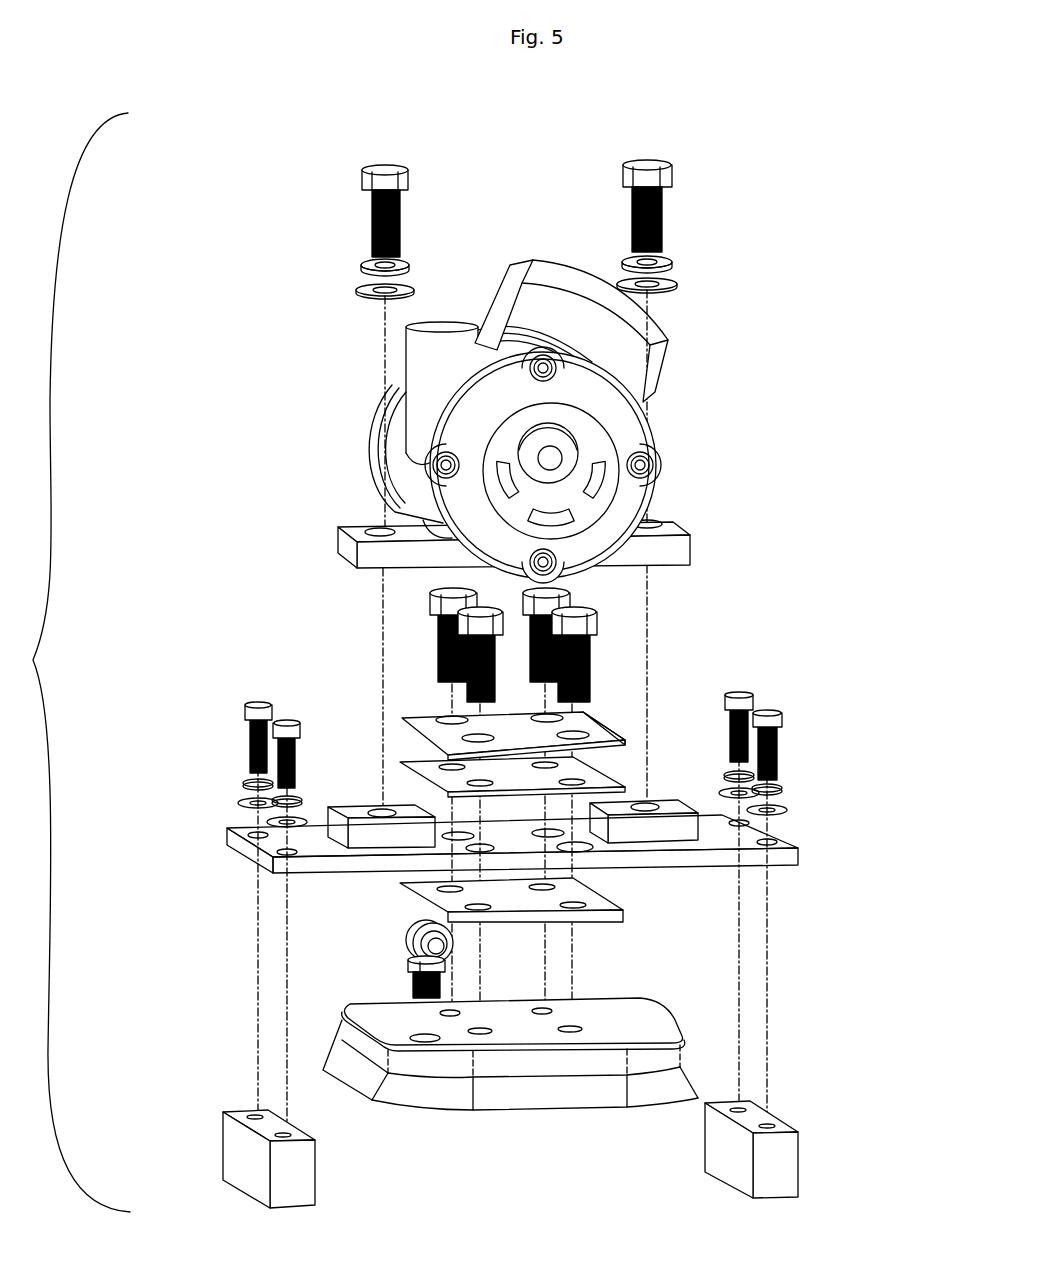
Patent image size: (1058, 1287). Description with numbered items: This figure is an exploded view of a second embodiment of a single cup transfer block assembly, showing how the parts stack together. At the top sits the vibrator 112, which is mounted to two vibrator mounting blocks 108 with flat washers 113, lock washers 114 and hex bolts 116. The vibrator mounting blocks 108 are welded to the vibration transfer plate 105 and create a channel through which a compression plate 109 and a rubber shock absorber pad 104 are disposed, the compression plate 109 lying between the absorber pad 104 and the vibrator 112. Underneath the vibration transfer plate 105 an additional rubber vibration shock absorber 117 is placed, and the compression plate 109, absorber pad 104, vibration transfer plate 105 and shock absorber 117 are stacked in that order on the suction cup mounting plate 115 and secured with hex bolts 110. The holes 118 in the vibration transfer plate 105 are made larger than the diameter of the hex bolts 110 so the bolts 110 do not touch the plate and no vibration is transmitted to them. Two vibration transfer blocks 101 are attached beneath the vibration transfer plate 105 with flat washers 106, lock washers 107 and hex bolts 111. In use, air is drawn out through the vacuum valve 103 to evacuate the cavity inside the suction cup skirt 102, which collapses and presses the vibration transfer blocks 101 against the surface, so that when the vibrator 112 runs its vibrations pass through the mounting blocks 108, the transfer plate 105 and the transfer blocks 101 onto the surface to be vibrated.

The vibration transfer block 101 is at (220, 1177).
The suction cup skirt 102 is at (312, 1068).
The vacuum valve 103 is at (404, 938).
The shock absorber pad 104 is at (397, 754).
The vibration transfer plate 105 is at (224, 845).
The flat washer 106 is at (233, 800).
The lock washer 107 is at (238, 781).
The vibrator mounting block 108 is at (370, 802).
The compression plate 109 is at (400, 714).
The hex bolt 110 is at (422, 615).
The hex bolt 111 is at (240, 705).
The vibrator 112 is at (335, 541).
The flat washer 113 is at (352, 290).
The lock washer 114 is at (358, 266).
The suction cup mounting plate 115 is at (612, 1015).
The hex bolt 116 is at (362, 173).
The rubber vibration shock absorber 117 is at (396, 895).
The hole 118 is at (583, 850).